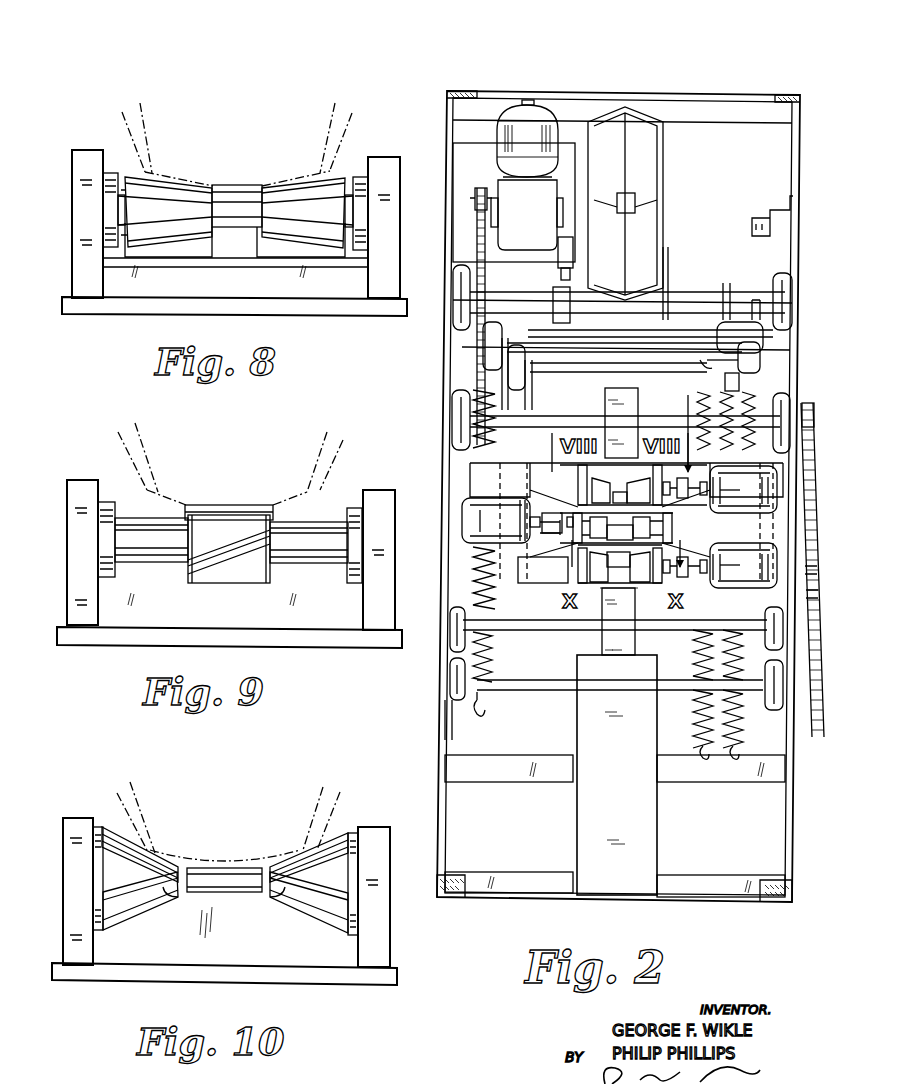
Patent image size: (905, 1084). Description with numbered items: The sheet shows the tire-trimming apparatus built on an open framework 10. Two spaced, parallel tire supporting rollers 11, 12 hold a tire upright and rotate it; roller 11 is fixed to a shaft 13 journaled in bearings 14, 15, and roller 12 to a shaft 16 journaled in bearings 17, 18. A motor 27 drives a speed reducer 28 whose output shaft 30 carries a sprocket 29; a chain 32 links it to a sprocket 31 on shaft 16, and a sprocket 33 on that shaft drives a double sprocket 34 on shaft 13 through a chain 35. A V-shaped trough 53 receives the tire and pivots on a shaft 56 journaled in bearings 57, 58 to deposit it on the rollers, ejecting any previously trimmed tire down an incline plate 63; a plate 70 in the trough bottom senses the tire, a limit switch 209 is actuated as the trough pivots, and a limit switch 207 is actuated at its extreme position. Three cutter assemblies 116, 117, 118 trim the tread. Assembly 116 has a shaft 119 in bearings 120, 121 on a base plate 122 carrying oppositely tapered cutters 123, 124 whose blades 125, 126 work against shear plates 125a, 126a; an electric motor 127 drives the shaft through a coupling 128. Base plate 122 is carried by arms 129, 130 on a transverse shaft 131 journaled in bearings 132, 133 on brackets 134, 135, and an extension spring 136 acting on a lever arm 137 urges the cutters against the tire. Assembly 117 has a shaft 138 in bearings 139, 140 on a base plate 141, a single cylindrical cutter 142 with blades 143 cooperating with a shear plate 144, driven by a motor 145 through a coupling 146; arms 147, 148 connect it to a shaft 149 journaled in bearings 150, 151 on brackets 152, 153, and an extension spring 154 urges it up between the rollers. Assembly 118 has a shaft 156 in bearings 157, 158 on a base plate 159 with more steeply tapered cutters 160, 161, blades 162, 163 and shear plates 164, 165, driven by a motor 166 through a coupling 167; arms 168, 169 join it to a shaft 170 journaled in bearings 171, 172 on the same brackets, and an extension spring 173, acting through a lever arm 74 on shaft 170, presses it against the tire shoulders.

In FIG. 2, the open framework 10 is at (780, 91).
In FIG. 2, the tire supporting roller 11 is at (610, 636).
In FIG. 2, the tire supporting roller 12 is at (631, 403).
In FIG. 2, the shaft 13 is at (530, 621).
In FIG. 2, the bearing 14 is at (808, 643).
In FIG. 2, the bearing 15 is at (455, 631).
In FIG. 2, the shaft 16 is at (688, 420).
In FIG. 2, the bearing 17 is at (789, 412).
In FIG. 2, the bearing 18 is at (463, 421).
In FIG. 2, the motor 27 is at (514, 111).
In FIG. 2, the speed reducer 28 is at (510, 187).
In FIG. 2, the sprocket 29 is at (485, 192).
In FIG. 2, the output shaft 30 is at (500, 210).
In FIG. 2, the sprocket 31 is at (513, 417).
In FIG. 2, the chain 32 is at (478, 222).
In FIG. 2, the sprocket 33 is at (812, 430).
In FIG. 2, the double sprocket 34 is at (809, 596).
In FIG. 2, the chain 35 is at (808, 578).
In FIG. 2, the trough 53 is at (644, 148).
In FIG. 2, the shaft 56 is at (673, 300).
In FIG. 2, the bearing 57 is at (786, 305).
In FIG. 2, the bearing 58 is at (465, 299).
In FIG. 2, the incline plate 63 is at (649, 830).
In FIG. 2, the plate 70 is at (628, 205).
In FIG. 2, the lever 74 is at (707, 360).
In FIG. 8, the cutter assembly 116 is at (349, 158).
In FIG. 2, the cutter assembly 116 is at (467, 482).
In FIG. 9, the cutter assembly 117 is at (308, 516).
In FIG. 2, the cutter assembly 117 is at (752, 528).
In FIG. 10, the cutter assembly 118 is at (336, 829).
In FIG. 2, the cutter assembly 118 is at (552, 584).
In FIG. 8, the shaft 119 is at (235, 218).
In FIG. 8, the bearing 120 is at (87, 156).
In FIG. 8, the bearing 121 is at (389, 181).
In FIG. 8, the base plate 122 is at (333, 311).
In FIG. 8, the rotary cutter 123 is at (185, 249).
In FIG. 8, the rotary cutter 124 is at (293, 251).
In FIG. 8, the cutting blades 125 is at (163, 218).
In FIG. 8, the shear plate 125a is at (142, 252).
In FIG. 8, the cutting blades 126 is at (320, 221).
In FIG. 8, the shear plate 126a is at (272, 253).
In FIG. 2, the electric motor 127 is at (768, 483).
In FIG. 2, the coupling 128 is at (735, 488).
In FIG. 2, the arm 129 is at (461, 667).
In FIG. 2, the arm 130 is at (720, 663).
In FIG. 2, the transverse shaft 131 is at (560, 683).
In FIG. 2, the bearing 132 is at (457, 691).
In FIG. 2, the bearing 133 is at (770, 688).
In FIG. 2, the bracket 134 is at (447, 703).
In FIG. 2, the bracket 135 is at (784, 704).
In FIG. 2, the extension spring 136 is at (484, 665).
In FIG. 2, the lever arm 137 is at (480, 718).
In FIG. 9, the shaft 138 is at (133, 544).
In FIG. 9, the bearing 139 is at (79, 487).
In FIG. 9, the bearing 140 is at (388, 538).
In FIG. 9, the base plate 141 is at (289, 642).
In FIG. 9, the rotary cutter 142 is at (205, 589).
In FIG. 9, the cutting blades 143 is at (240, 548).
In FIG. 9, the shear plate 144 is at (235, 506).
In FIG. 2, the electric motor 145 is at (472, 530).
In FIG. 2, the coupling 146 is at (499, 522).
In FIG. 2, the arm 147 is at (480, 379).
In FIG. 2, the arm 148 is at (756, 363).
In FIG. 2, the transverse shaft 149 is at (670, 353).
In FIG. 2, the bearing 150 is at (488, 320).
In FIG. 2, the bearing 151 is at (752, 320).
In FIG. 2, the bracket 152 is at (461, 352).
In FIG. 2, the bracket 153 is at (786, 350).
In FIG. 2, the extension spring 154 is at (740, 727).
In FIG. 10, the shaft 156 is at (228, 881).
In FIG. 10, the bearing 157 is at (80, 821).
In FIG. 10, the bearing 158 is at (377, 833).
In FIG. 10, the base plate 159 is at (298, 980).
In FIG. 10, the rotary cutter 160 is at (124, 926).
In FIG. 10, the rotary cutter 161 is at (322, 931).
In FIG. 10, the cutting blades 162 is at (143, 884).
In FIG. 10, the cutting blades 163 is at (287, 891).
In FIG. 10, the shear plate 164 is at (147, 840).
In FIG. 10, the shear plate 165 is at (288, 857).
In FIG. 2, the electric motor 166 is at (765, 560).
In FIG. 2, the coupling 167 is at (738, 560).
In FIG. 2, the arm 168 is at (533, 386).
In FIG. 2, the arm 169 is at (733, 388).
In FIG. 2, the transverse shaft 170 is at (603, 362).
In FIG. 2, the bearing 171 is at (522, 320).
In FIG. 2, the bearing 172 is at (727, 320).
In FIG. 2, the extension spring 173 is at (693, 717).
In FIG. 2, the limit switch 207 is at (752, 222).
In FIG. 2, the limit switch 209 is at (564, 250).